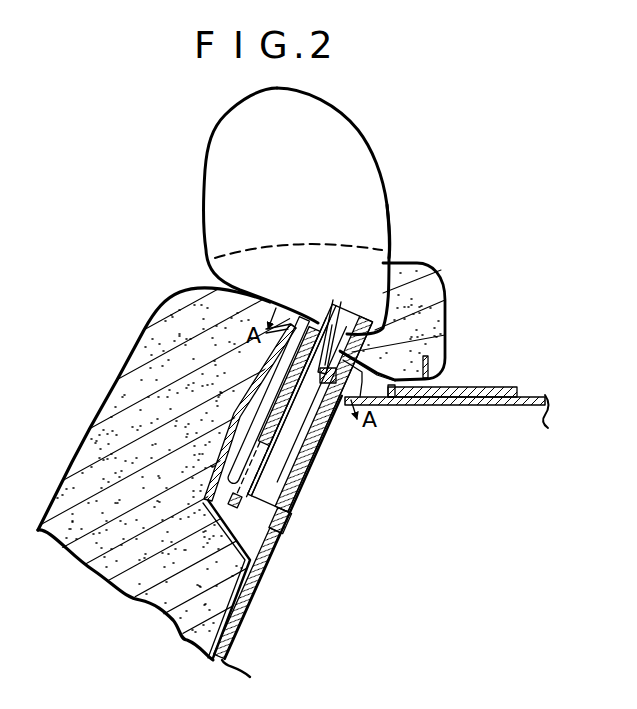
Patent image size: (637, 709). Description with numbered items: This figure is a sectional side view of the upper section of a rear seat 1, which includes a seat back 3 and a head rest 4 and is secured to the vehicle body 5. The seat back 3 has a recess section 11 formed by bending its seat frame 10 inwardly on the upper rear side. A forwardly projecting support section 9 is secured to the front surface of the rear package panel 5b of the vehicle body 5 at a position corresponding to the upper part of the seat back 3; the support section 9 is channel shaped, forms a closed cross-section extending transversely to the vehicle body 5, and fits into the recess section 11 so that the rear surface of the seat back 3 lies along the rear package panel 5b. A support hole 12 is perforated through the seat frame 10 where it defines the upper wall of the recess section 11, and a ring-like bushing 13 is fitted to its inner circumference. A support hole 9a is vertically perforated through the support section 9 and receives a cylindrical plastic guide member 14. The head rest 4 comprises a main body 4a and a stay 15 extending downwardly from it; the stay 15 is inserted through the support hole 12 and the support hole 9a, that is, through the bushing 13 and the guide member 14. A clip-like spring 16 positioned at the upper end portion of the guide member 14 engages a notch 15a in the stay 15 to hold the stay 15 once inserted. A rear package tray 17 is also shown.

The rear seat 1 is at (102, 308).
The seat back 3 is at (76, 444).
The head rest 4 is at (199, 184).
The main body 4a is at (370, 197).
The vehicle body 5 is at (492, 411).
The rear package panel 5b is at (250, 596).
The support section 9 is at (332, 437).
The support hole 9a is at (290, 520).
The seat frame 10 is at (240, 660).
The recess section 11 is at (270, 570).
The support hole 12 is at (341, 331).
The ring-like bushing 13 is at (290, 320).
The cylindrical plastic guide member 14 is at (284, 479).
The stay 15 is at (284, 451).
The notch 15a is at (330, 334).
The clip-like spring 16 is at (345, 415).
The rear package tray 17 is at (484, 388).